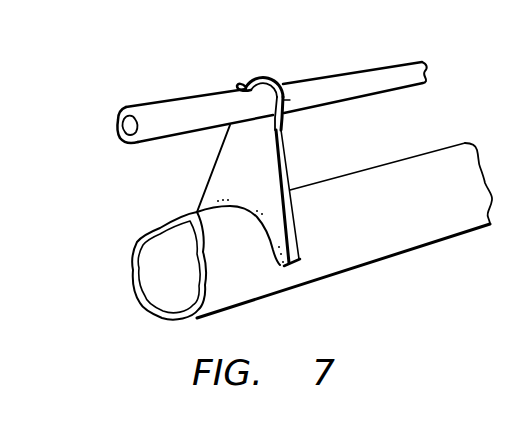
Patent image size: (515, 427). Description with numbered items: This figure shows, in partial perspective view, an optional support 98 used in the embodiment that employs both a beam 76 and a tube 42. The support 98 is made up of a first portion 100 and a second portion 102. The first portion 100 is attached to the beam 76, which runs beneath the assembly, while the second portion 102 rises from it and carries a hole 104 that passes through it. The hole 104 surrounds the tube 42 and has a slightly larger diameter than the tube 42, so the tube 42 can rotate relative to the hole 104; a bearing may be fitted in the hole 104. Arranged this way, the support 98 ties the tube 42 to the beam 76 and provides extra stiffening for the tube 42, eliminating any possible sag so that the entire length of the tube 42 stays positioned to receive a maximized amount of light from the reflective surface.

The tube 42 is at (172, 110).
The beam 76 is at (243, 283).
The support 98 is at (260, 158).
The first portion 100 is at (283, 230).
The second portion 102 is at (263, 77).
The hole 104 is at (240, 79).